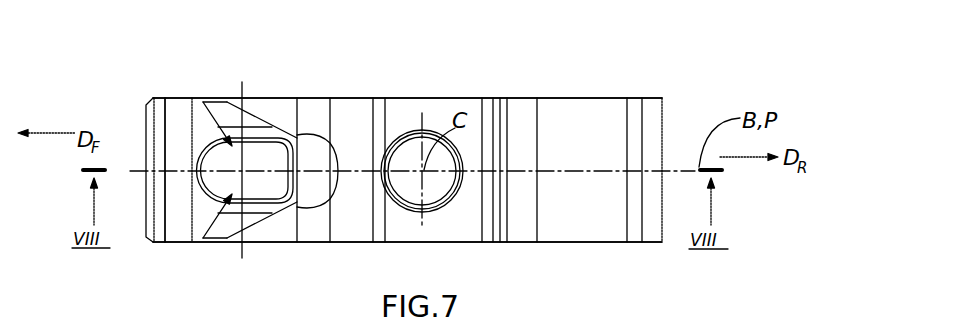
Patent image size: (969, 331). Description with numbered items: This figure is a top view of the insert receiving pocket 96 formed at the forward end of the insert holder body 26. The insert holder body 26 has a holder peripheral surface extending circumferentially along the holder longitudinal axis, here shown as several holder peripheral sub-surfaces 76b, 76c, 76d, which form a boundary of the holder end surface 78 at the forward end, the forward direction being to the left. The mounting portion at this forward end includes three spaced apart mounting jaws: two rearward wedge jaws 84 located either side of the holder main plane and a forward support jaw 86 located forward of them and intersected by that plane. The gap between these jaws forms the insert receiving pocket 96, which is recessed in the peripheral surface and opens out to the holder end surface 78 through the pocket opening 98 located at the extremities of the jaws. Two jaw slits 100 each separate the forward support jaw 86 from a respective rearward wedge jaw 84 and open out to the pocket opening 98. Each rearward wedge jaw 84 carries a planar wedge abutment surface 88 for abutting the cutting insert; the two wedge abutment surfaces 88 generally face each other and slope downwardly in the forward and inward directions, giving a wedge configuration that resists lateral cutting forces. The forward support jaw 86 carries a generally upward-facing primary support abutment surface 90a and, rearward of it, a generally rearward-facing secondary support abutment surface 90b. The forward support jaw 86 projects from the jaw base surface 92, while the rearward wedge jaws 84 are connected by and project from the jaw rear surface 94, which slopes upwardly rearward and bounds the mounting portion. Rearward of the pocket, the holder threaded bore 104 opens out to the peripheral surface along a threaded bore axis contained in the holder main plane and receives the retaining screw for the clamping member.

The insert holder body 26 is at (618, 66).
The holder peripheral sub-surface 76b is at (559, 98).
The holder peripheral sub-surface 76c is at (597, 229).
The holder peripheral sub-surface 76d is at (556, 256).
The holder end surface 78 is at (146, 128).
The rearward wedge jaw 84 is at (257, 100).
The forward support jaw 86 is at (202, 237).
The wedge abutment surface 88 is at (196, 92).
The primary support abutment surface 90a is at (150, 213).
The secondary support abutment surface 90b is at (178, 118).
The jaw base surface 92 is at (267, 152).
The jaw rear surface 94 is at (310, 143).
The insert receiving pocket 96 is at (168, 228).
The pocket opening 98 is at (230, 136).
The jaw slit 100 is at (191, 87).
The holder threaded bore 104 is at (407, 128).